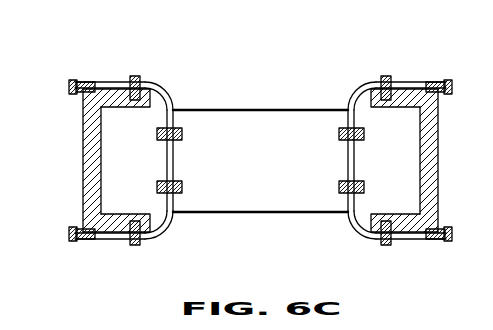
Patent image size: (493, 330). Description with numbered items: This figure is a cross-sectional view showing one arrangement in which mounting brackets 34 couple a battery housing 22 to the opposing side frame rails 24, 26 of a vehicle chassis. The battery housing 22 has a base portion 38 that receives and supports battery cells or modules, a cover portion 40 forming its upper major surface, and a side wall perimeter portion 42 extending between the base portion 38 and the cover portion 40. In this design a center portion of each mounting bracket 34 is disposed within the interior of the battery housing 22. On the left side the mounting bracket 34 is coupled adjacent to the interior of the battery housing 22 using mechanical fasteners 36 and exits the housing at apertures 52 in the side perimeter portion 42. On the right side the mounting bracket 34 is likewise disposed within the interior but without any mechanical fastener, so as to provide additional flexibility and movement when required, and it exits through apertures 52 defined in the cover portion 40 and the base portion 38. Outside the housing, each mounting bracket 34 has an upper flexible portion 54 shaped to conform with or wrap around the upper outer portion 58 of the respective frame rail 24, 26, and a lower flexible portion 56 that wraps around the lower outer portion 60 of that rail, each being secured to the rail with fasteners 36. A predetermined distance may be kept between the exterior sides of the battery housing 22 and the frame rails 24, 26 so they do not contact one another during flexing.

The battery housing 22 is at (260, 160).
The frame rail 24 is at (82, 160).
The frame rail 26 is at (439, 160).
The mounting bracket 34 is at (257, 159).
The fasteners 36 is at (72, 88).
The base portion 38 is at (255, 214).
The cover portion 40 is at (264, 108).
The side wall perimeter portion 42 is at (164, 151).
The apertures 52 is at (176, 106).
The upper flexible portion 54 is at (95, 81).
The lower flexible portion 56 is at (88, 242).
The upper outer portion 58 is at (118, 96).
The lower outer portion 60 is at (110, 228).